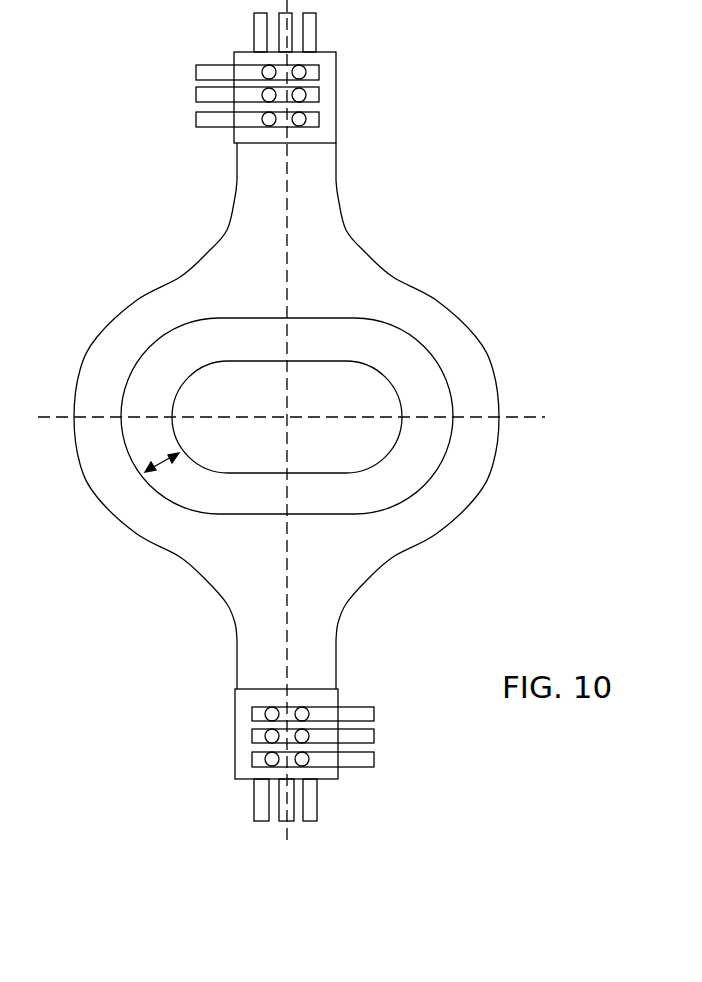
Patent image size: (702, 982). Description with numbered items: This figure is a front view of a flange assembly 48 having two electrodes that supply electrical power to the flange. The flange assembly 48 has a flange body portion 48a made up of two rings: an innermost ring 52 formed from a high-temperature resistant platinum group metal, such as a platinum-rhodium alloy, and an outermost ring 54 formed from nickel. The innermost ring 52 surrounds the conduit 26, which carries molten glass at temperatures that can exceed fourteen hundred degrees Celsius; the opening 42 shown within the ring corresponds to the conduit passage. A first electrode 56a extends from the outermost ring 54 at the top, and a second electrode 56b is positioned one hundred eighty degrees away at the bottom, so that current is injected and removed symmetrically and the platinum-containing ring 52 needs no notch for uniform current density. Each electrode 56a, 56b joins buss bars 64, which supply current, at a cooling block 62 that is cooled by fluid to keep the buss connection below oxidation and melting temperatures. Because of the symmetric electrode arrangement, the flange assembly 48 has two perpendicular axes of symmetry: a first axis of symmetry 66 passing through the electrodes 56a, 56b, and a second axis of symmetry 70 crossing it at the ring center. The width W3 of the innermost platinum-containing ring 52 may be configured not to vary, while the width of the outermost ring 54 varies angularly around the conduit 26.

The conduit 26 is at (378, 463).
The aperture 42 is at (287, 417).
The flange assembly 48 is at (273, 392).
The flange body portion 48a is at (82, 337).
The innermost ring 52 is at (212, 514).
The outermost ring 54 is at (418, 288).
The first electrode 56a is at (236, 173).
The second electrode 56b is at (237, 643).
The cooling block 62 is at (337, 108).
The buss bar 64 is at (211, 64).
The axis of symmetry 66 is at (290, 634).
The second axis of symmetry 70 is at (528, 415).
The width of innermost ring W3 is at (165, 463).